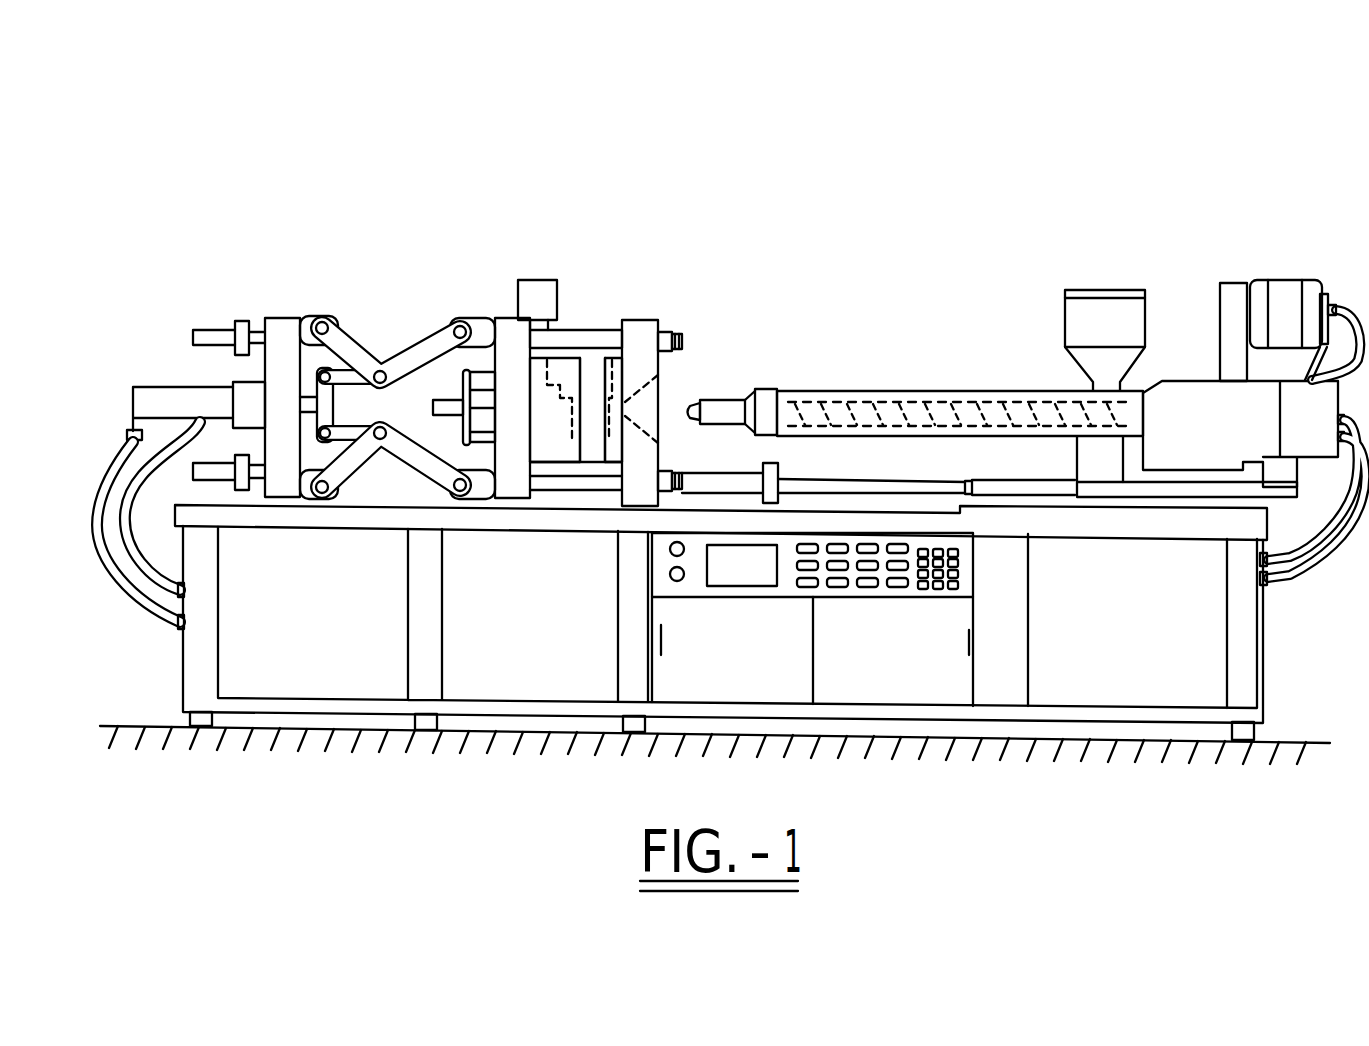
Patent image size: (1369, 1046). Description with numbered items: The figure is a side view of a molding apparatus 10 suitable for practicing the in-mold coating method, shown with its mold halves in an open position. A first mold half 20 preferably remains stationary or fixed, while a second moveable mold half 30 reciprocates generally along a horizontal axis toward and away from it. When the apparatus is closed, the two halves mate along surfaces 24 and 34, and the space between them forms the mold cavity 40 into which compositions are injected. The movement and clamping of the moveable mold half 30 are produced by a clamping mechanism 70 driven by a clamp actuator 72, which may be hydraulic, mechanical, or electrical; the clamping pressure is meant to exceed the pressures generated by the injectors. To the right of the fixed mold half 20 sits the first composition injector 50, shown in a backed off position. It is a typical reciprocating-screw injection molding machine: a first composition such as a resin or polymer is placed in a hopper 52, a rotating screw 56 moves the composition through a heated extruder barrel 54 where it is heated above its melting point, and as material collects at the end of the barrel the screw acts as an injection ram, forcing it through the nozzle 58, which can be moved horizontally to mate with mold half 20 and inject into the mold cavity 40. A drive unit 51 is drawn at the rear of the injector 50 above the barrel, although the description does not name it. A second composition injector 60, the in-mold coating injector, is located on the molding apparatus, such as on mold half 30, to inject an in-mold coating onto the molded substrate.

The molding apparatus 10 is at (570, 192).
The first mold half 20 is at (655, 320).
The mating surface 24 is at (597, 360).
The second moveable mold half 30 is at (507, 316).
The mating surface 34 is at (594, 405).
The mold cavity 40 is at (596, 458).
The first composition injector 50 is at (963, 362).
The drive motor 51 is at (1283, 280).
The hopper 52 is at (1066, 296).
The heated extruder barrel 54 is at (905, 390).
The rotating screw 56 is at (905, 425).
The nozzle 58 is at (690, 402).
The second composition injector 60 is at (527, 280).
The clamping mechanism 70 is at (296, 296).
The clamp actuator 72 is at (170, 385).